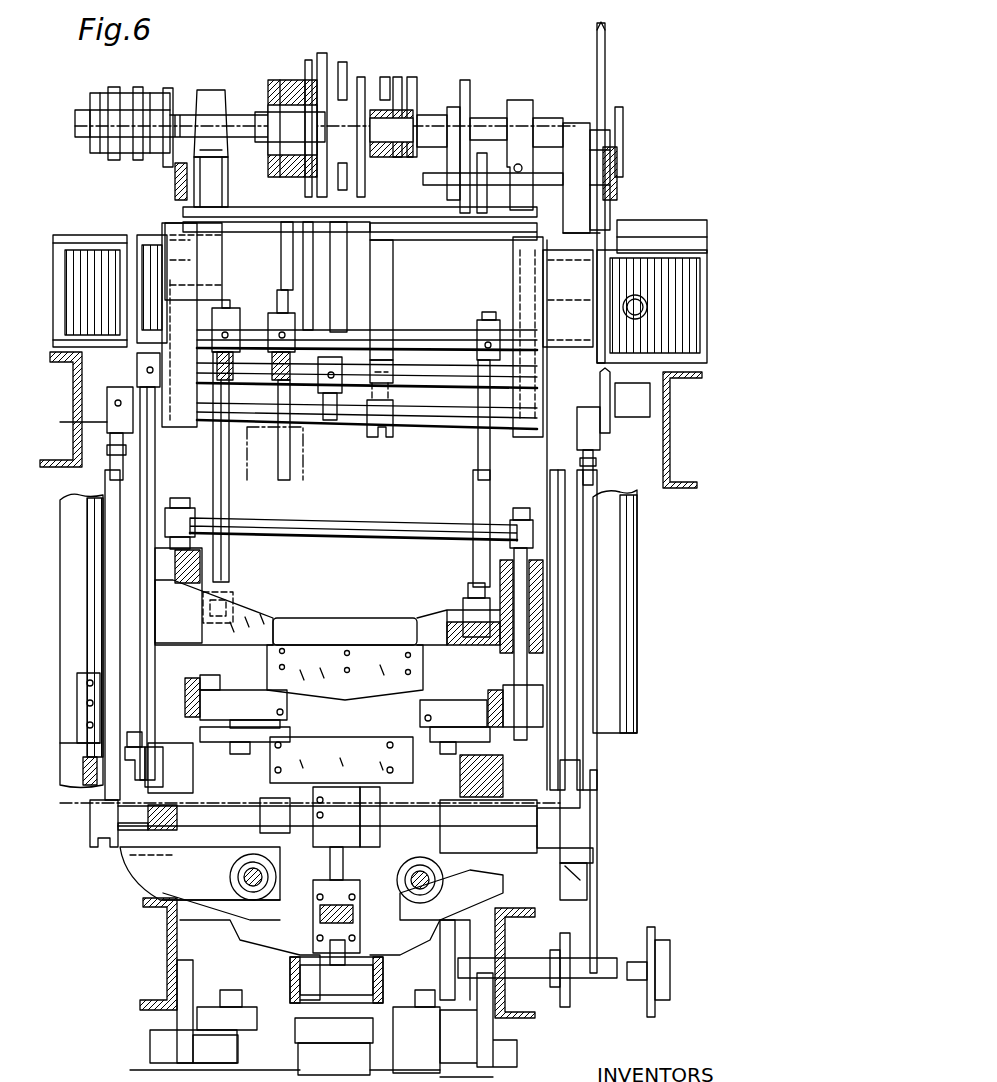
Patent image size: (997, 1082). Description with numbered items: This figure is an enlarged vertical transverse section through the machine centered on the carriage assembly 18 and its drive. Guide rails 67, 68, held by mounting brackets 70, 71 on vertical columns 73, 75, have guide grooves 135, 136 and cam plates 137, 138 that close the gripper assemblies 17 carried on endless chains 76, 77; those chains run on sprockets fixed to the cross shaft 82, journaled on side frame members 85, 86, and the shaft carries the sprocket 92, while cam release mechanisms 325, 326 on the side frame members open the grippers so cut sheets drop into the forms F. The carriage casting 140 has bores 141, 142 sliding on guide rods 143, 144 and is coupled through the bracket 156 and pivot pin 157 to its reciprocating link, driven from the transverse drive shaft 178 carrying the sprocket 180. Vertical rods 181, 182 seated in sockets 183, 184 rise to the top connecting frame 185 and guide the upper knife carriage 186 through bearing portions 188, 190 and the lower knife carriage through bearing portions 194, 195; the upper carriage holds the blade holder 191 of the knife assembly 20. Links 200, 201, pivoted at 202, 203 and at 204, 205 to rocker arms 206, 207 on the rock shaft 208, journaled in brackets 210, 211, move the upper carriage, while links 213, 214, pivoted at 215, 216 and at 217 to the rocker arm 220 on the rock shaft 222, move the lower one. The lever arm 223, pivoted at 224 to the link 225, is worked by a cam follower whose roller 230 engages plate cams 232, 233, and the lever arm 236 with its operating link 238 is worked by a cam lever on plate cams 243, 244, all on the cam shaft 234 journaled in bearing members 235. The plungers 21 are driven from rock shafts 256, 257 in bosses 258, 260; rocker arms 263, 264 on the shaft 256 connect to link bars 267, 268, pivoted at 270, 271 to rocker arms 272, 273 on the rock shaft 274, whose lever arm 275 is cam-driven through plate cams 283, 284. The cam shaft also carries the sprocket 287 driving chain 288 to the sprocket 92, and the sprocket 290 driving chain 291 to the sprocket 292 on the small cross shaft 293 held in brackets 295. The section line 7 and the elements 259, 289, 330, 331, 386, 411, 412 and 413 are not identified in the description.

The section line 7 is at (68, 240).
The gripper assemblies 17 is at (397, 32).
The carriage assembly 18 is at (392, 601).
The knife assembly 20 is at (539, 938).
The sheet placing plungers 21 is at (385, 985).
The guide rail 67 is at (192, 678).
The guide rail 68 is at (492, 685).
The mounting bracket 70 is at (113, 660).
The mounting bracket 71 is at (652, 450).
The vertical column 73 is at (60, 545).
The vertical column 75 is at (640, 565).
The endless chain 76 is at (235, 745).
The endless chain 77 is at (458, 745).
The cross shaft 82 is at (565, 870).
The side frame member 85 is at (143, 905).
The side frame member 86 is at (515, 963).
The sprocket 92 is at (597, 815).
The guide groove 135 is at (240, 690).
The guide groove 136 is at (440, 700).
The cam plate 137 is at (210, 675).
The cam plate 138 is at (470, 690).
The main frame forming casting 140 is at (205, 897).
The guideway forming bore 141 is at (240, 900).
The guideway forming bore 142 is at (405, 930).
The guide rod 143 is at (258, 897).
The guide rod 144 is at (408, 888).
The bracket 156 is at (313, 932).
The pivot pin 157 is at (364, 894).
The transverse drive shaft 178 is at (520, 972).
The sprocket 180 is at (570, 988).
The vertical rod 181 is at (195, 520).
The vertical rod 182 is at (510, 535).
The socket 183 is at (125, 862).
The socket 184 is at (470, 900).
The top connecting frame 185 is at (340, 520).
The upper carriage forming member 186 is at (265, 612).
The bearing forming portion 188 is at (200, 562).
The bearing forming portion 190 is at (500, 570).
The blade holder 191 is at (332, 625).
The bearing forming portion 194 is at (200, 742).
The bearing forming portion 195 is at (460, 755).
The vertically extending link 200 is at (230, 492).
The vertically extending link 201 is at (472, 478).
The pivotal connection 202 is at (228, 598).
The pivotal connection 203 is at (465, 600).
The pivotal connection 204 is at (238, 290).
The pivotal connection 205 is at (486, 312).
The rocker arm 206 is at (242, 318).
The rocker arm 207 is at (476, 325).
The rock shaft 208 is at (405, 338).
The bearing forming bracket 210 is at (180, 420).
The bearing forming bracket 211 is at (523, 425).
The vertically extending link 213 is at (140, 522).
The vertically extending link 214 is at (565, 528).
The pivotal connection 215 is at (125, 765).
The pivotal connection 216 is at (580, 785).
The pivotal connection 217 is at (105, 392).
The rocker arm 220 is at (137, 378).
The rock shaft 222 is at (300, 393).
The lever arm 223 is at (290, 310).
The pivotal connection 224 is at (287, 288).
The vertically extending link 225 is at (307, 250).
The cam roller 230 is at (522, 110).
The plate cam 232 is at (285, 116).
The plate cam 233 is at (308, 62).
The cam shaft 234 is at (480, 130).
The bearing member 235 is at (210, 93).
The lever arm 236 is at (322, 397).
The operating link 238 is at (350, 265).
The plate cam 243 is at (330, 50).
The plate cam 244 is at (361, 78).
The rock shaft 256 is at (215, 808).
The rock shaft 257 is at (375, 838).
The bearing forming boss 258 is at (118, 800).
The block 259 is at (370, 790).
The bearing forming boss 260 is at (268, 800).
The rocker arm 263 is at (90, 828).
The rocker arm 264 is at (585, 853).
The link bar member 267 is at (105, 598).
The link bar member 268 is at (597, 625).
The pivotal connection 270 is at (108, 450).
The pivotal connection 271 is at (596, 462).
The rocker arm 272 is at (69, 419).
The rocker arm 273 is at (608, 433).
The rock shaft 274 is at (370, 380).
The lever arm 275 is at (395, 440).
The plate cam 283 is at (398, 77).
The plate cam 284 is at (414, 80).
The sprocket 287 is at (622, 126).
The drive chain 288 is at (618, 190).
The shaft 289 is at (559, 57).
The sprocket 290 is at (466, 82).
The drive chain 291 is at (605, 150).
The sprocket 292 is at (477, 175).
The cross shaft 293 is at (423, 176).
The bracket 295 is at (595, 212).
The cam release mechanism 325 is at (237, 1050).
The cam release mechanism 326 is at (430, 1055).
The block 330 is at (197, 1018).
The plate 331 is at (177, 995).
The disc 386 is at (637, 975).
The cam 411 is at (105, 155).
The disc 412 is at (167, 160).
The disc 413 is at (136, 158).
The forms F is at (372, 1065).